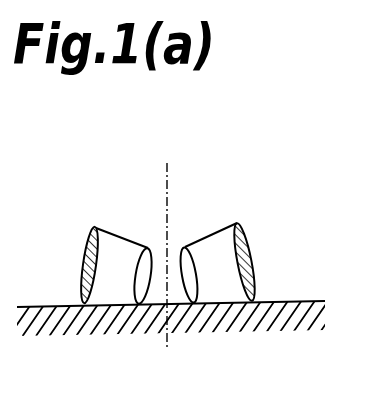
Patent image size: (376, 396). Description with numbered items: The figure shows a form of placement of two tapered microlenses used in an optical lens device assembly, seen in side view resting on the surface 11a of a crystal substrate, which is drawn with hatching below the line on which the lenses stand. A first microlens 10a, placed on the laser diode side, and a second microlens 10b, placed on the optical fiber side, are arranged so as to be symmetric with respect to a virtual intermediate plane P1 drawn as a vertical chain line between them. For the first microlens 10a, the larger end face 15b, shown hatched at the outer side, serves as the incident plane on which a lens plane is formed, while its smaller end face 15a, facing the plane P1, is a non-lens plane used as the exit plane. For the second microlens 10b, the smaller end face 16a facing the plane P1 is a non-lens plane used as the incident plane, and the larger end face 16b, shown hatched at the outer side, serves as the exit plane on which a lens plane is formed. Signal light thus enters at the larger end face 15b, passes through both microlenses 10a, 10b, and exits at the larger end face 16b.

The microlens 10a is at (90, 221).
The microlens 10b is at (248, 222).
The smaller end face 15a is at (147, 248).
The larger end face 15b is at (88, 263).
The smaller end face 16a is at (180, 247).
The larger end face 16b is at (255, 257).
The surface of the crystal substrate 11a is at (282, 301).
The virtual intermediate plane P1 is at (169, 238).